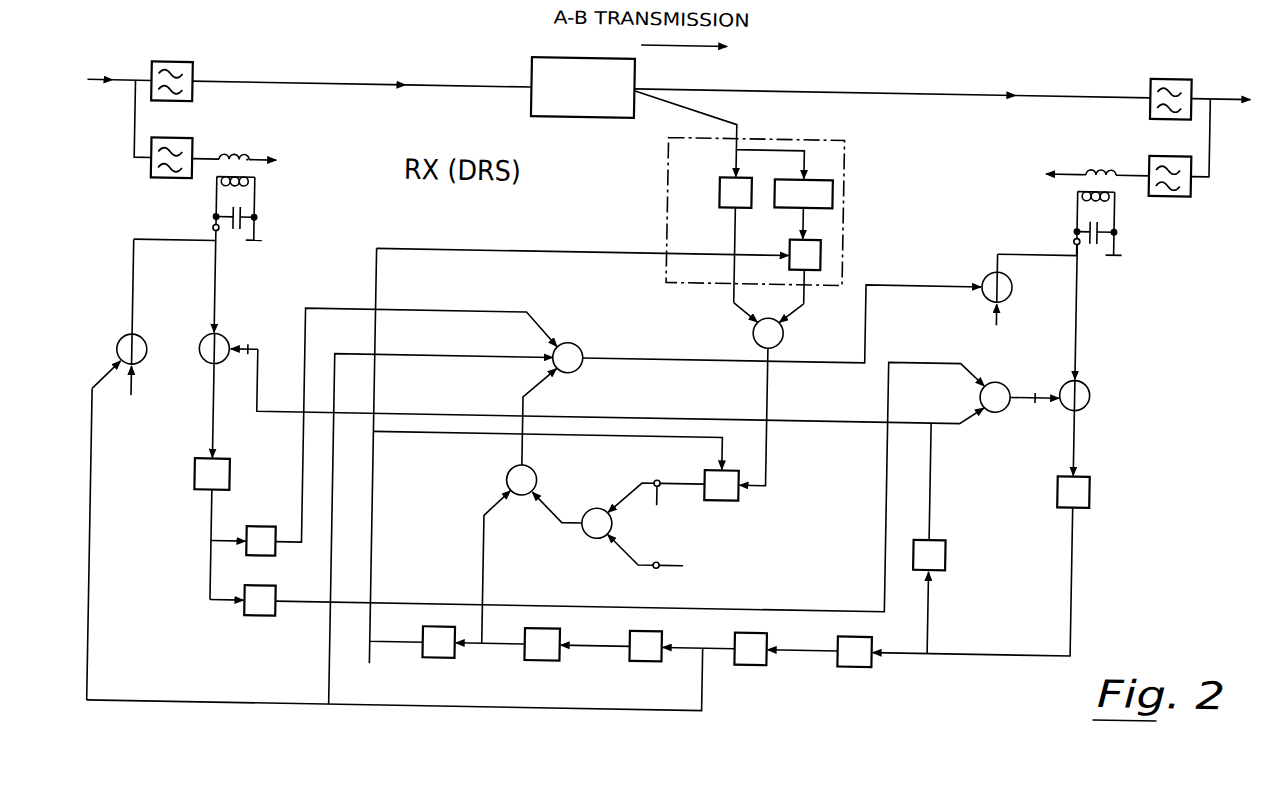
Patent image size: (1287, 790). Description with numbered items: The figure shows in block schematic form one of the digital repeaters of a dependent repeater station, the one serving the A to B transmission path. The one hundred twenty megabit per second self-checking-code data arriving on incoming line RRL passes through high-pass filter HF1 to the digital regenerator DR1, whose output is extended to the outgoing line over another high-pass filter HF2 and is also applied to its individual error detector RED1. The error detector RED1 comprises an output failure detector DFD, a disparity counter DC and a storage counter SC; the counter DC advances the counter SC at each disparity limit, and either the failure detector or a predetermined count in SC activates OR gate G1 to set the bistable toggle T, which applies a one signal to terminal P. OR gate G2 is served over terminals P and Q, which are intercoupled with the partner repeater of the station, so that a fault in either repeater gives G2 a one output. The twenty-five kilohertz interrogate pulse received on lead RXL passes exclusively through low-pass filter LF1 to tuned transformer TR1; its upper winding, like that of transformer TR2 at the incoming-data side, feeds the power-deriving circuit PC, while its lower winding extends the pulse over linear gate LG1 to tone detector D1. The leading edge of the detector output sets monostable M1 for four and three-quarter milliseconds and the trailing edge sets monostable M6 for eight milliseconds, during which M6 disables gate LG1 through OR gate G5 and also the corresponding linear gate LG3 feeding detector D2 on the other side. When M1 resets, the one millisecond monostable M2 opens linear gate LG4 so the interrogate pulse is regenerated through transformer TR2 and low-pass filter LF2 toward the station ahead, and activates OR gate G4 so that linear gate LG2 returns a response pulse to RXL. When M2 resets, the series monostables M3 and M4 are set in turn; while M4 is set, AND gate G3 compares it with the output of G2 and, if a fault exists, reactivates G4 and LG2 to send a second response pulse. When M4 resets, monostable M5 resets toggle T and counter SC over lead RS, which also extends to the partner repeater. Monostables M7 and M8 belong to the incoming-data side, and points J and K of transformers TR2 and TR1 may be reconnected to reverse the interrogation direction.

The incoming line RRL is at (120, 64).
The high-pass filter HF1 is at (172, 69).
The low-pass filter LF2 is at (172, 146).
The digital regenerator DR1 is at (583, 87).
The high-pass filter HF2 is at (1171, 86).
The outgoing line RXL is at (1221, 85).
The low-pass filter LF1 is at (1170, 165).
The tuned transformer TR2 is at (227, 185).
The tuned transformer TR1 is at (1112, 202).
The power-deriving circuit arrangement PC is at (664, 168).
The point J is at (205, 232).
The point K is at (1067, 244).
The linear gate LG4 is at (147, 470).
The linear gate LG3 is at (231, 344).
The linear gate LG2 is at (985, 304).
The linear gate LG1 is at (1094, 360).
The tone detector D2 is at (212, 474).
The tone detector D1 is at (1073, 492).
The monostable device M7 is at (268, 549).
The monostable device M8 is at (266, 608).
The monostable device M6 is at (949, 539).
The monostable device M1 is at (866, 666).
The monostable device M2 is at (752, 663).
The monostable device M3 is at (647, 660).
The monostable device M4 is at (545, 658).
The monostable device M5 is at (445, 657).
The reset lead RS is at (398, 629).
The error detector RED1 is at (755, 211).
The output failure detector DFD is at (735, 192).
The disparity counter DC is at (803, 193).
The storage counter SC is at (805, 255).
The OR gate G1 is at (775, 278).
The OR gate G2 is at (572, 512).
The AND gate G3 is at (535, 432).
The OR gate G4 is at (582, 353).
The OR gate G5 is at (1019, 411).
The bistable toggle T is at (721, 485).
The terminal P is at (656, 485).
The terminal Q is at (645, 563).